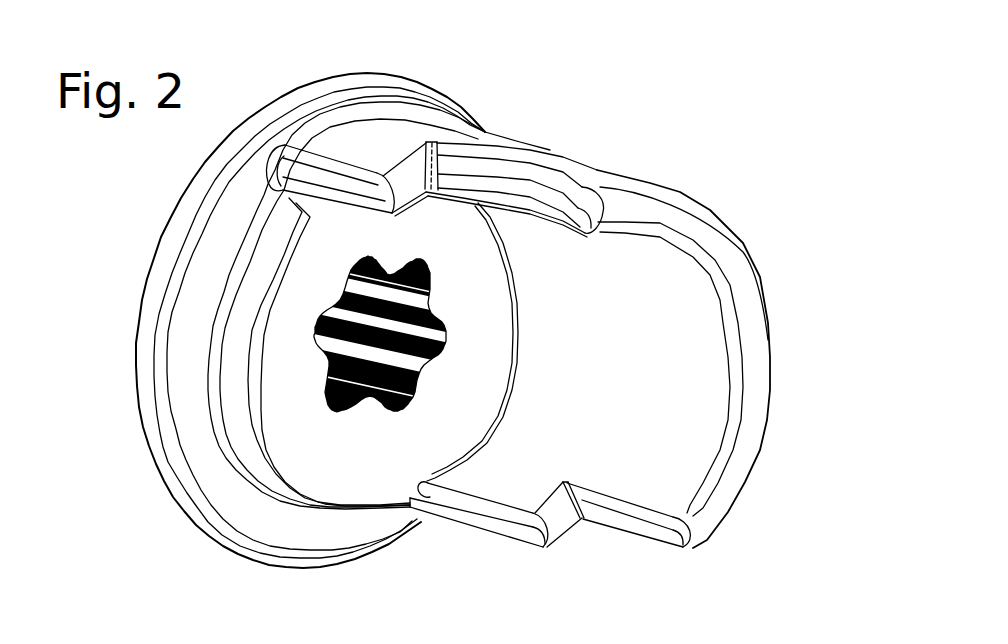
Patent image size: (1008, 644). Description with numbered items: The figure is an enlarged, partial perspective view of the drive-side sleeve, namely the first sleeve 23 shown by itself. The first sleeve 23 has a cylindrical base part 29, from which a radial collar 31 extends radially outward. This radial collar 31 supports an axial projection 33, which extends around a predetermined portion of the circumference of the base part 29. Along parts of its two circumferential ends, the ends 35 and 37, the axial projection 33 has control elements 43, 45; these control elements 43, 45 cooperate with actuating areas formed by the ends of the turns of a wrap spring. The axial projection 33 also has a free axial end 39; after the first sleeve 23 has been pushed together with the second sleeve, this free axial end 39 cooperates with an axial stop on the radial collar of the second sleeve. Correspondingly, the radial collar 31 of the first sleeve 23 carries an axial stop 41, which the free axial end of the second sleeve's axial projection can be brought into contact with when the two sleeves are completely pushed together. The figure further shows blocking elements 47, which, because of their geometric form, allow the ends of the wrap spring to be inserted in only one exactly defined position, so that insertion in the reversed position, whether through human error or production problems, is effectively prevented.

The first sleeve 23 is at (167, 199).
The cylindrical base part 29 is at (332, 450).
The radial collar 31 is at (180, 353).
The axial projection 33 is at (633, 381).
The circumferential end 35 is at (552, 182).
The circumferential end 37 is at (511, 522).
The free axial end 39 is at (743, 292).
The axial stop 41 is at (195, 445).
The control element 43 is at (320, 173).
The control element 45 is at (652, 528).
The blocking element 47 is at (438, 182).